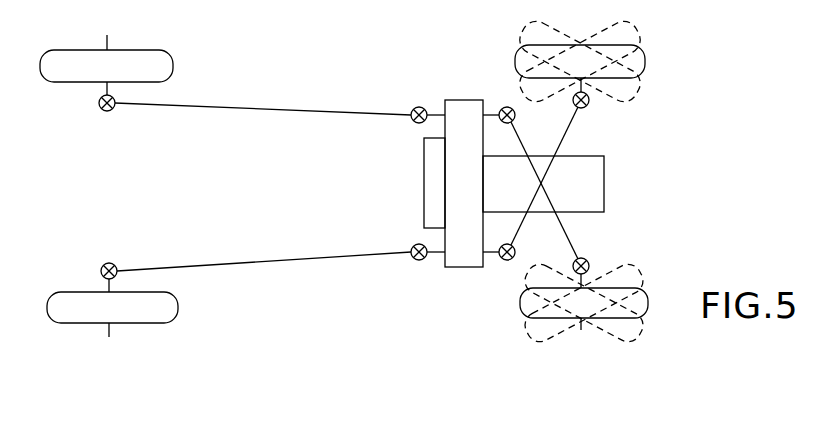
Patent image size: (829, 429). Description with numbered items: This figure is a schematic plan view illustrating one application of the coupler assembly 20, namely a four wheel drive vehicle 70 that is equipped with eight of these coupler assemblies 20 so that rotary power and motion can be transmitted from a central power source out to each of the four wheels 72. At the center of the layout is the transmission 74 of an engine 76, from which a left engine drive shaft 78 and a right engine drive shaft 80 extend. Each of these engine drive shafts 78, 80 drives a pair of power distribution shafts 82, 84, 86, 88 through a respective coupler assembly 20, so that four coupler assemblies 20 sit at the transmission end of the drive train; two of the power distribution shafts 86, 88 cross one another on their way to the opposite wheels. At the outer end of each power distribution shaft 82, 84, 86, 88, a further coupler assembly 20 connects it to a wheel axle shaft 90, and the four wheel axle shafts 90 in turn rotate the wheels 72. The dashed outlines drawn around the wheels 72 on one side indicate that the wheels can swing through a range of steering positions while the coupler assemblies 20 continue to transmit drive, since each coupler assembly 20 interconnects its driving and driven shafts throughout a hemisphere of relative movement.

The coupler assembly 20 is at (118, 114).
The four wheel drive vehicle 70 is at (424, 208).
The wheels 72 is at (117, 50).
The transmission 74 is at (445, 158).
The engine 76 is at (607, 168).
The left engine drive shaft 78 is at (440, 112).
The right engine drive shaft 80 is at (435, 257).
The power distribution shaft 82 is at (308, 111).
The power distribution shaft 84 is at (318, 262).
The power distribution shaft 86 is at (563, 132).
The power distribution shaft 88 is at (572, 242).
The wheel axle shafts 90 is at (103, 88).